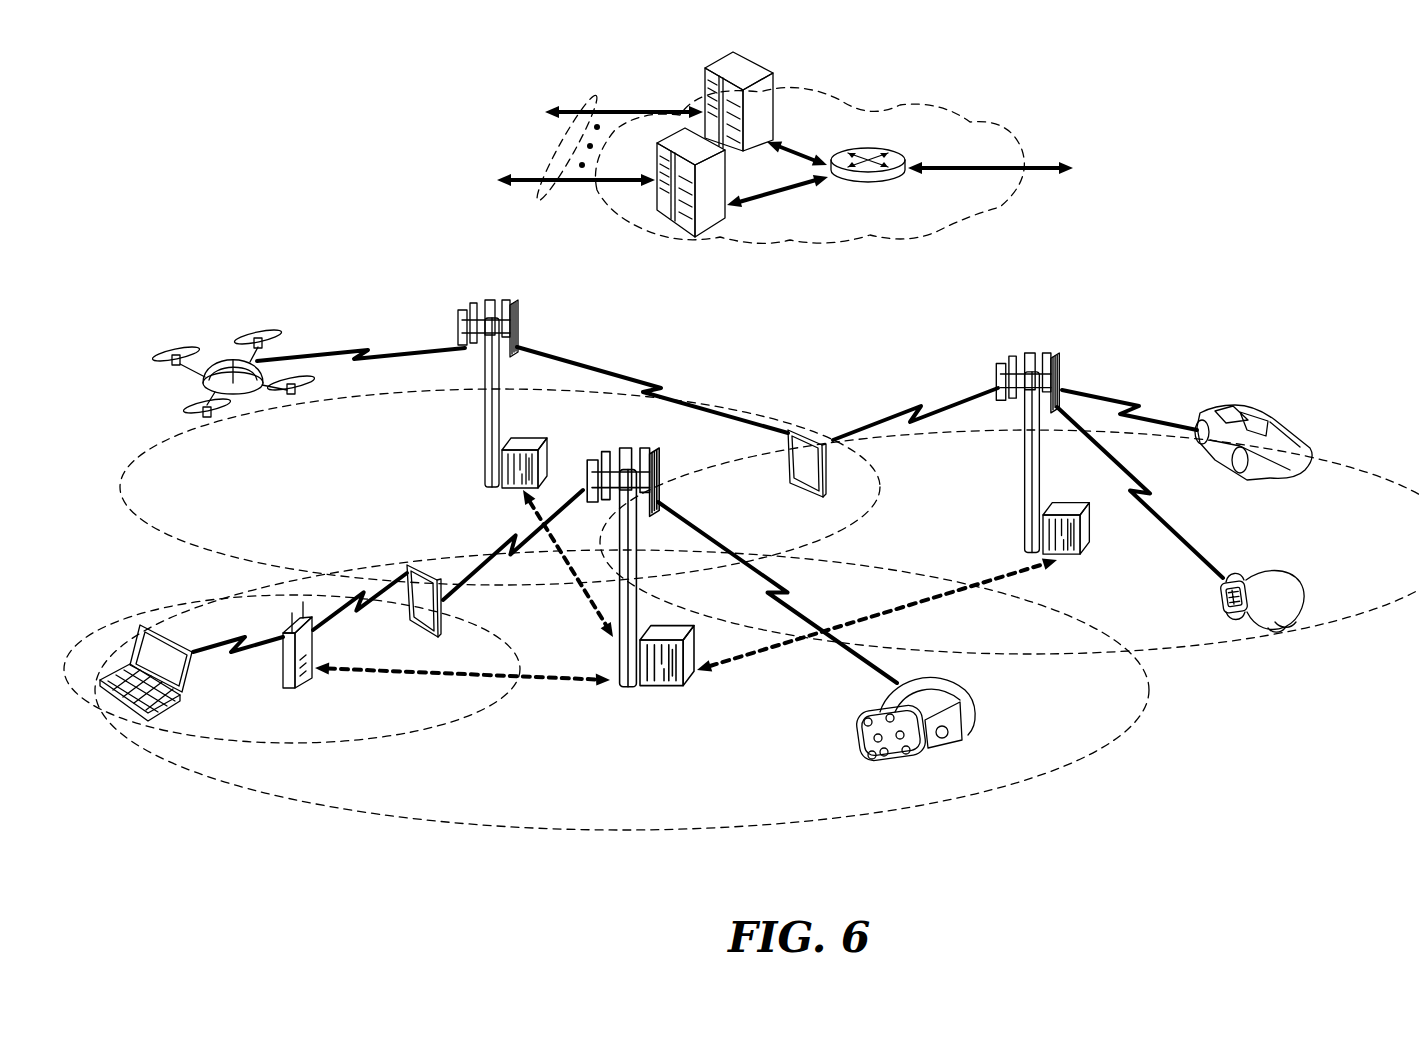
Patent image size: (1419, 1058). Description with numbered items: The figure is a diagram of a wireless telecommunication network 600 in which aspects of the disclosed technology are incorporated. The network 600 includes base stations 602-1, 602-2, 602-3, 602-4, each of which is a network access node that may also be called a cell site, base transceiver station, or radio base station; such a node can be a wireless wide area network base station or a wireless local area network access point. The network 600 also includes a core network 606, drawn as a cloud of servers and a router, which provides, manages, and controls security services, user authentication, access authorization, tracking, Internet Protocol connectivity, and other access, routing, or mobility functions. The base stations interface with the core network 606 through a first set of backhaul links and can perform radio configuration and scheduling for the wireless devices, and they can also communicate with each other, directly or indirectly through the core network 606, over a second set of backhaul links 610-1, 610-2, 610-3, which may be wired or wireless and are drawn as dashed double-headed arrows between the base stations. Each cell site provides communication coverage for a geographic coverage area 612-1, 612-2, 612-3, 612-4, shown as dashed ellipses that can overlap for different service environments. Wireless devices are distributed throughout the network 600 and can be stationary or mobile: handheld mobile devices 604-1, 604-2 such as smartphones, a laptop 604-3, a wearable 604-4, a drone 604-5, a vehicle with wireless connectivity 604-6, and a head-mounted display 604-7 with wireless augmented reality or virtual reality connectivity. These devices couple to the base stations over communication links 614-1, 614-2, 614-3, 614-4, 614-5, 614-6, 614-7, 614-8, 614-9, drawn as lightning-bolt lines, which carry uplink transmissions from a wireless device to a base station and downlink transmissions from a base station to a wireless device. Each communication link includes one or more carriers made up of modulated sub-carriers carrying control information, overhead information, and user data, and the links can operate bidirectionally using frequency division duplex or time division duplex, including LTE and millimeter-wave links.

The wireless telecommunication network 600 is at (1328, 160).
The core network 606 is at (902, 235).
The base station 602-1 is at (627, 690).
The base station 602-2 is at (483, 432).
The base station 602-3 is at (1023, 470).
The base station 602-4 is at (282, 673).
The handheld mobile device 604-1 is at (443, 613).
The handheld mobile device 604-2 is at (787, 467).
The laptop 604-3 is at (123, 713).
The wearable 604-4 is at (1240, 578).
The drone 604-5 is at (242, 397).
The vehicle with wireless connectivity 604-6 is at (1280, 418).
The head-mounted display 604-7 is at (975, 703).
The backhaul link 610-1 is at (353, 673).
The backhaul link 610-2 is at (943, 593).
The backhaul link 610-3 is at (585, 592).
The geographic coverage area 612-1 is at (552, 826).
The geographic coverage area 612-2 is at (422, 733).
The geographic coverage area 612-3 is at (193, 542).
The geographic coverage area 612-4 is at (1323, 467).
The communication link 614-1 is at (795, 592).
The communication link 614-2 is at (505, 538).
The communication link 614-3 is at (207, 652).
The communication link 614-4 is at (360, 612).
The communication link 614-5 is at (362, 345).
The communication link 614-6 is at (658, 385).
The communication link 614-7 is at (905, 400).
The communication link 614-8 is at (1153, 505).
The communication link 614-9 is at (1122, 392).